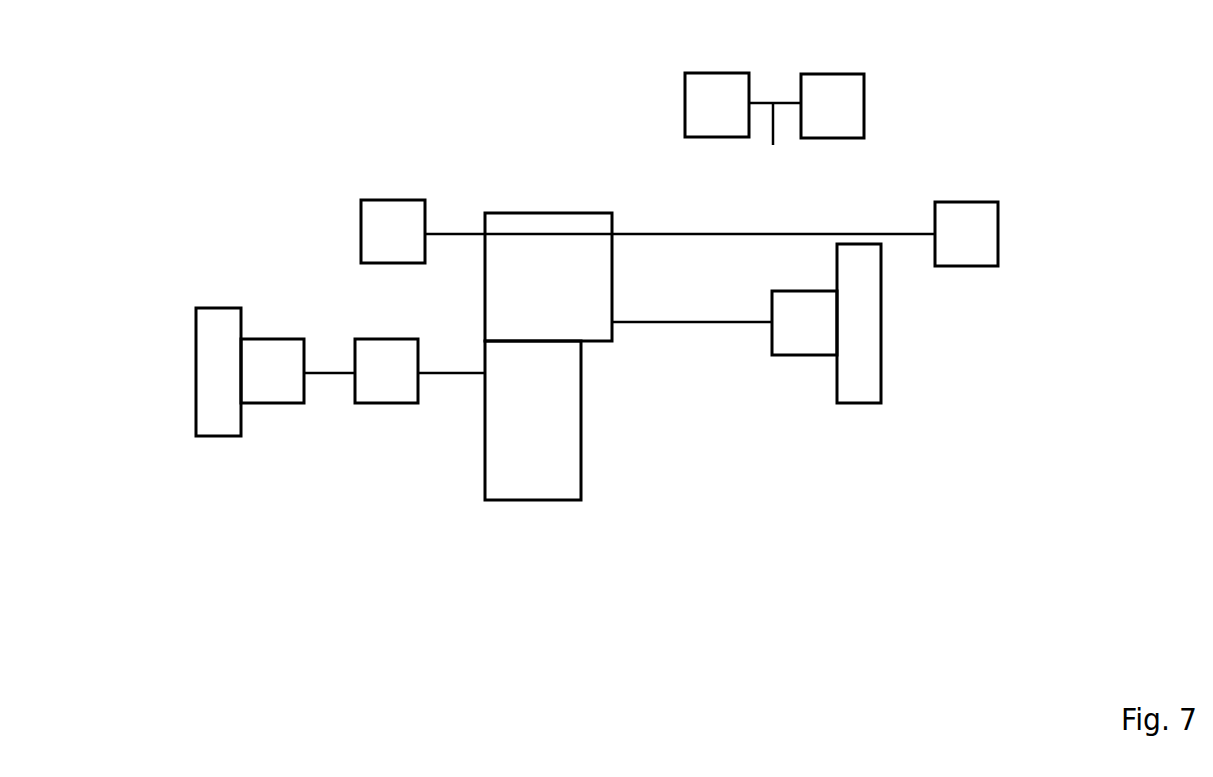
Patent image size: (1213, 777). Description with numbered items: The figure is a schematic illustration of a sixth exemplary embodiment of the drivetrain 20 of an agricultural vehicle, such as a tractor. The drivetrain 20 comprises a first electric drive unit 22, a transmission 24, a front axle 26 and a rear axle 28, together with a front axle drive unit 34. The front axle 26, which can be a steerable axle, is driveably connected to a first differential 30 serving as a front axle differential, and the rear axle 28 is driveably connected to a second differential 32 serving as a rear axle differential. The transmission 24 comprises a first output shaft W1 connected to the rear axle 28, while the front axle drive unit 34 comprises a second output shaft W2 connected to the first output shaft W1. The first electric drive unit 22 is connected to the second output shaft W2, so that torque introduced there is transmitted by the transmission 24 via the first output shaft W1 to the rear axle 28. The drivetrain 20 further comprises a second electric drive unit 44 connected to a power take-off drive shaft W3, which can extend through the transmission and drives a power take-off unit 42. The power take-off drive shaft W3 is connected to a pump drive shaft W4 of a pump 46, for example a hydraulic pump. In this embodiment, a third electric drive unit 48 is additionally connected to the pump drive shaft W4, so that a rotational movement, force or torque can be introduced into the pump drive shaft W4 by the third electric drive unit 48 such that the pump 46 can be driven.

The drivetrain 20 is at (270, 185).
The first electric drive unit 22 is at (379, 338).
The transmission 24 is at (531, 212).
The front axle 26 is at (194, 341).
The rear axle 28 is at (865, 404).
The first differential 30 is at (279, 338).
The second differential 32 is at (804, 356).
The front axle drive unit 34 is at (539, 502).
The power take-off unit 42 is at (960, 200).
The second electric drive unit 44 is at (385, 198).
The pump 46 is at (708, 72).
The third electric drive unit 48 is at (834, 72).
The first output shaft W1 is at (651, 323).
The second output shaft W2 is at (445, 373).
The power take-off drive shaft W3 is at (676, 234).
The pump drive shaft W4 is at (775, 142).